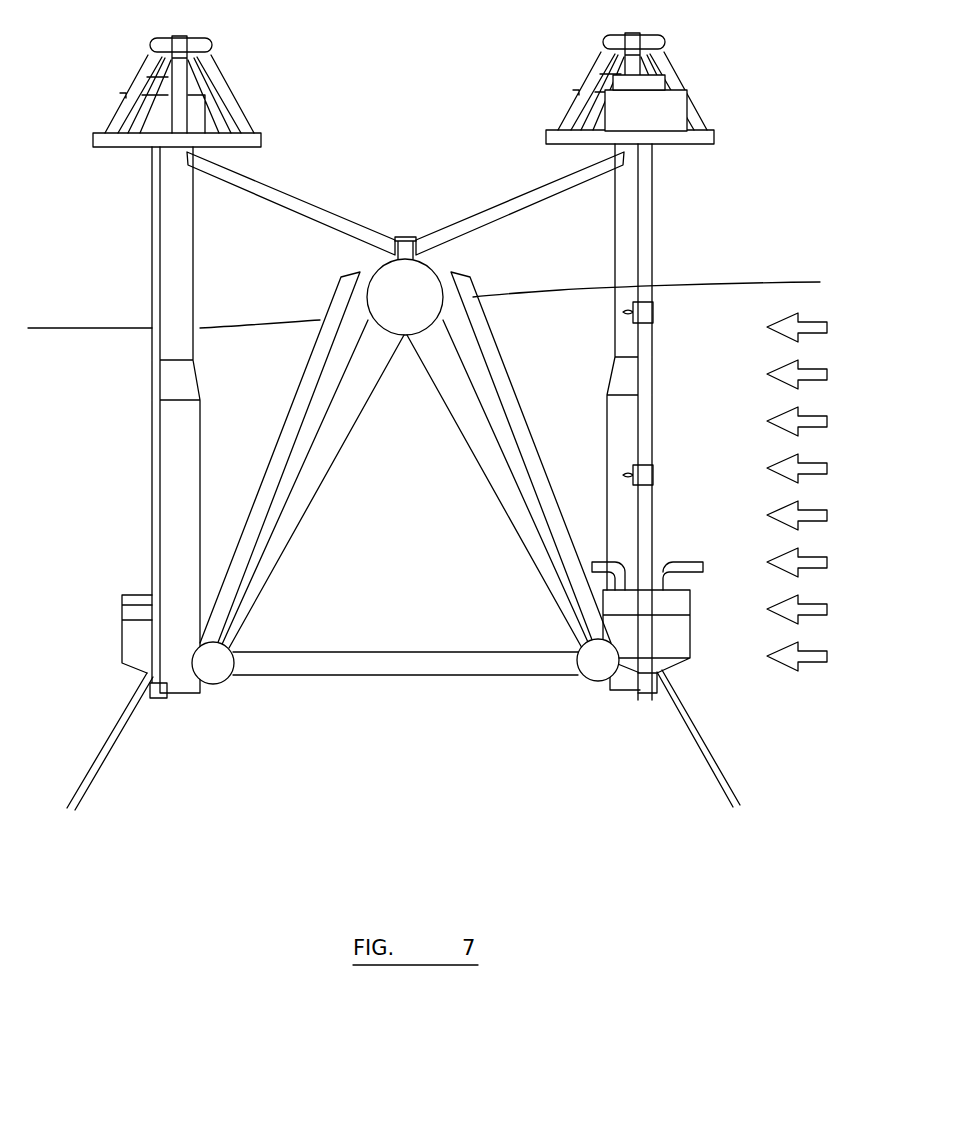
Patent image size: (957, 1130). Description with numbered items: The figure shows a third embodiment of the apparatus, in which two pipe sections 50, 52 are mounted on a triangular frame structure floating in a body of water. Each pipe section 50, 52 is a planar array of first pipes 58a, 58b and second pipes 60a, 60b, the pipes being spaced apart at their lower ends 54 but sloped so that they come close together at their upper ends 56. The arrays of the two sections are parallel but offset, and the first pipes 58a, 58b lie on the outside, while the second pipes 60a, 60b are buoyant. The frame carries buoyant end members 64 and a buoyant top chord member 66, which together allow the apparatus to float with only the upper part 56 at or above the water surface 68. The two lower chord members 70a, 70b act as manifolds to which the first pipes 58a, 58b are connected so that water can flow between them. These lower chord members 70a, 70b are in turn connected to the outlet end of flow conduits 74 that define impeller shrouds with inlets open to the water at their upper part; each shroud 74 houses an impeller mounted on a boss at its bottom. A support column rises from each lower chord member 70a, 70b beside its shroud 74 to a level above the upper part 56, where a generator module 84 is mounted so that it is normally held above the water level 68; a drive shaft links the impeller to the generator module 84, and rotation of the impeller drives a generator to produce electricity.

The pipe section 50 is at (252, 468).
The pipe section 52 is at (555, 443).
The lower ends 54 is at (420, 795).
The upper ends 56 is at (420, 158).
The first pipe 58a is at (300, 402).
The first pipe 58b is at (508, 386).
The second pipe 60a is at (343, 338).
The second pipe 60b is at (470, 360).
The buoyant end member 64 is at (285, 533).
The buoyant top chord member 66 is at (393, 290).
The water surface 68 is at (132, 323).
The lower chord member 70a is at (212, 667).
The lower chord member 70b is at (597, 662).
The flow conduit 74 is at (677, 633).
The generator module 84 is at (690, 78).